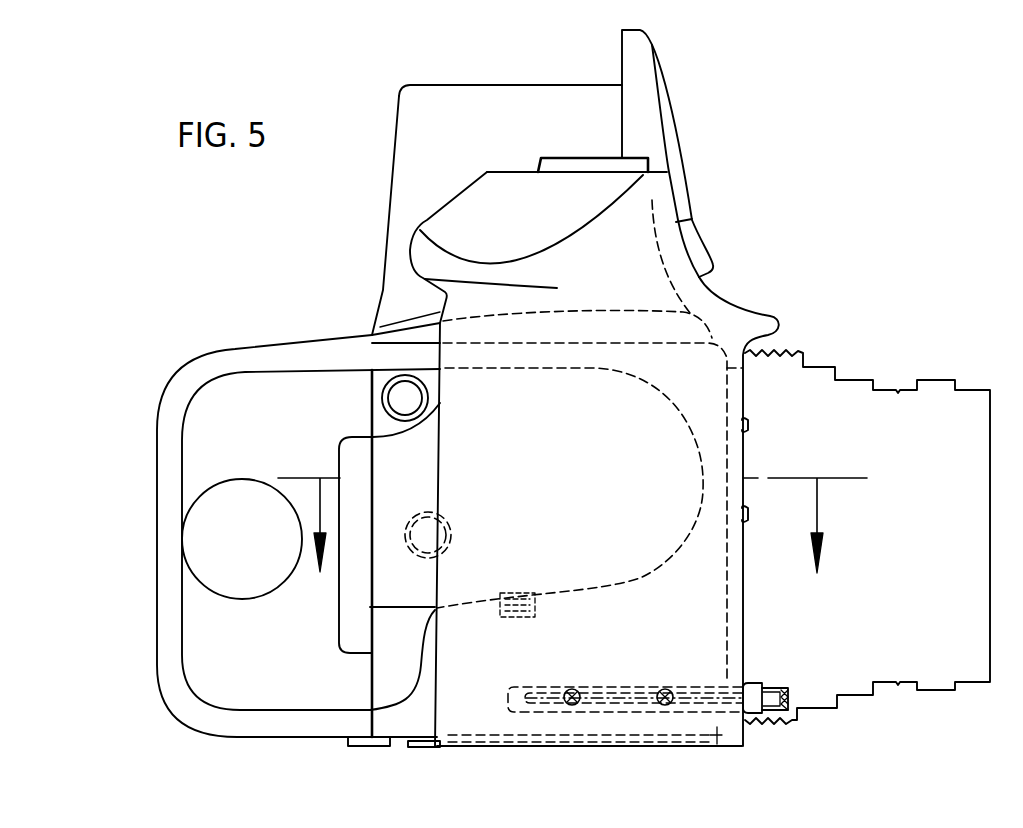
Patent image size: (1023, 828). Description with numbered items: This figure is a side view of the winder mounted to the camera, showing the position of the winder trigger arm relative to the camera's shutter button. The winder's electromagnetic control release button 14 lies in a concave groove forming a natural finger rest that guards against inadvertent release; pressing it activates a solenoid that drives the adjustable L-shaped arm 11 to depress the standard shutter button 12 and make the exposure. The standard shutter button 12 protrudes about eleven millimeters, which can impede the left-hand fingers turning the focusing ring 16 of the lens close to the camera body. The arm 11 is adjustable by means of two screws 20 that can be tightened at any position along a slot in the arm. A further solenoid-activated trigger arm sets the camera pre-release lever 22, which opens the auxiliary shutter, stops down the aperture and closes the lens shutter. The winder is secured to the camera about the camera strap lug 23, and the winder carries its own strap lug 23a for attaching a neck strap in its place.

The adjustable L-shaped arm 11 is at (788, 687).
The shutter button 12 is at (740, 677).
The electromagnetic control release button 14 is at (698, 250).
The focusing ring 16 is at (783, 353).
The screws 20 is at (665, 695).
The pre-release lever 22 is at (505, 610).
The strap lug 23 is at (417, 525).
The strap lug 23a is at (397, 393).